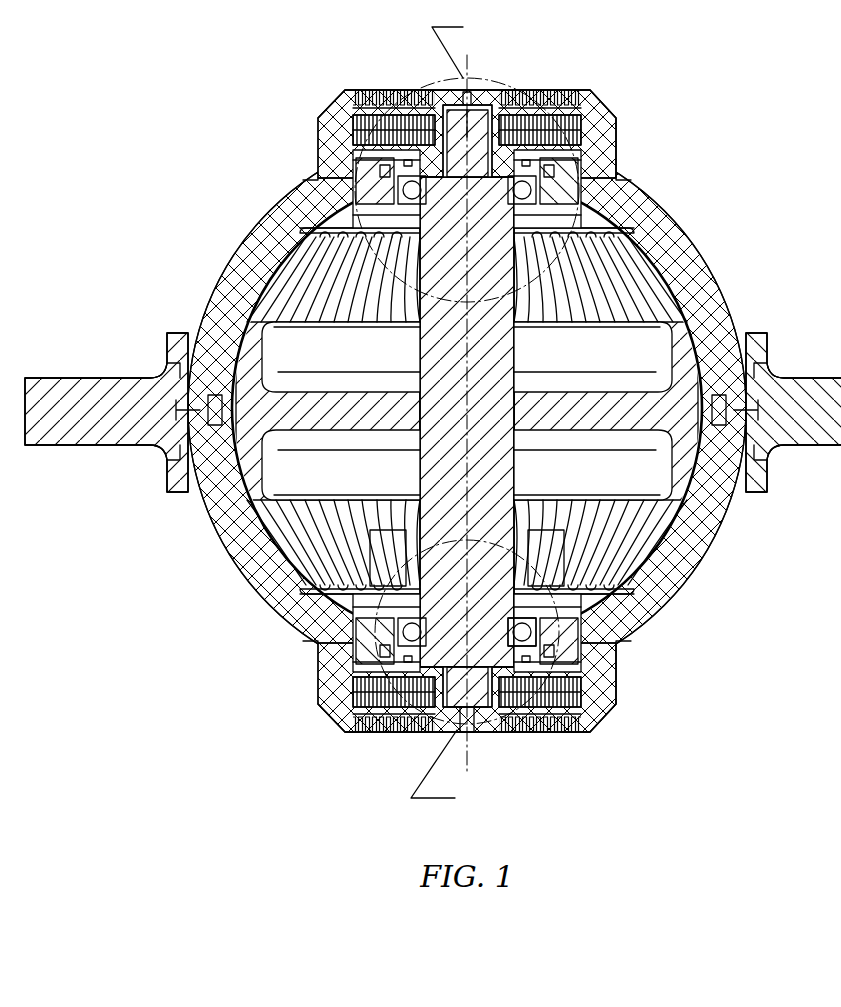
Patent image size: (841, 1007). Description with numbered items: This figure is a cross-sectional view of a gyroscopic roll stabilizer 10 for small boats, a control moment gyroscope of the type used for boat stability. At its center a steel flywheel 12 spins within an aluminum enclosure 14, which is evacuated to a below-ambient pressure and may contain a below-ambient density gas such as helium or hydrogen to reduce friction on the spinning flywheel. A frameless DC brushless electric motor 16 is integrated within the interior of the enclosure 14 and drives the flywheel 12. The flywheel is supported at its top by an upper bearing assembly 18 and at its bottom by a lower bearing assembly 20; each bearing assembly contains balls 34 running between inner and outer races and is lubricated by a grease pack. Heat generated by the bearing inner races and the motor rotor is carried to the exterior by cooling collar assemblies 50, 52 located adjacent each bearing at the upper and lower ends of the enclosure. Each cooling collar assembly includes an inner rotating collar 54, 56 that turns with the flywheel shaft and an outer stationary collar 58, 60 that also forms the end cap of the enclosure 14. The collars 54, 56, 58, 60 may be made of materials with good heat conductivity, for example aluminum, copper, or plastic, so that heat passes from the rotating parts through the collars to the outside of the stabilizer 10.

The gyroscopic roll stabilizer 10 is at (431, 413).
The flywheel 12 is at (492, 431).
The enclosure 14 is at (697, 270).
The electric motor 16 is at (318, 580).
The upper bearing assembly 18 is at (513, 80).
The lower bearing assembly 20 is at (567, 600).
The balls 34 is at (530, 638).
The cooling collar assembly 50 is at (327, 87).
The cooling collar assembly 52 is at (345, 742).
The inner rotating collar 54 is at (437, 117).
The inner rotating collar 56 is at (497, 693).
The outer stationary collar 58 is at (337, 152).
The outer stationary collar 60 is at (318, 712).